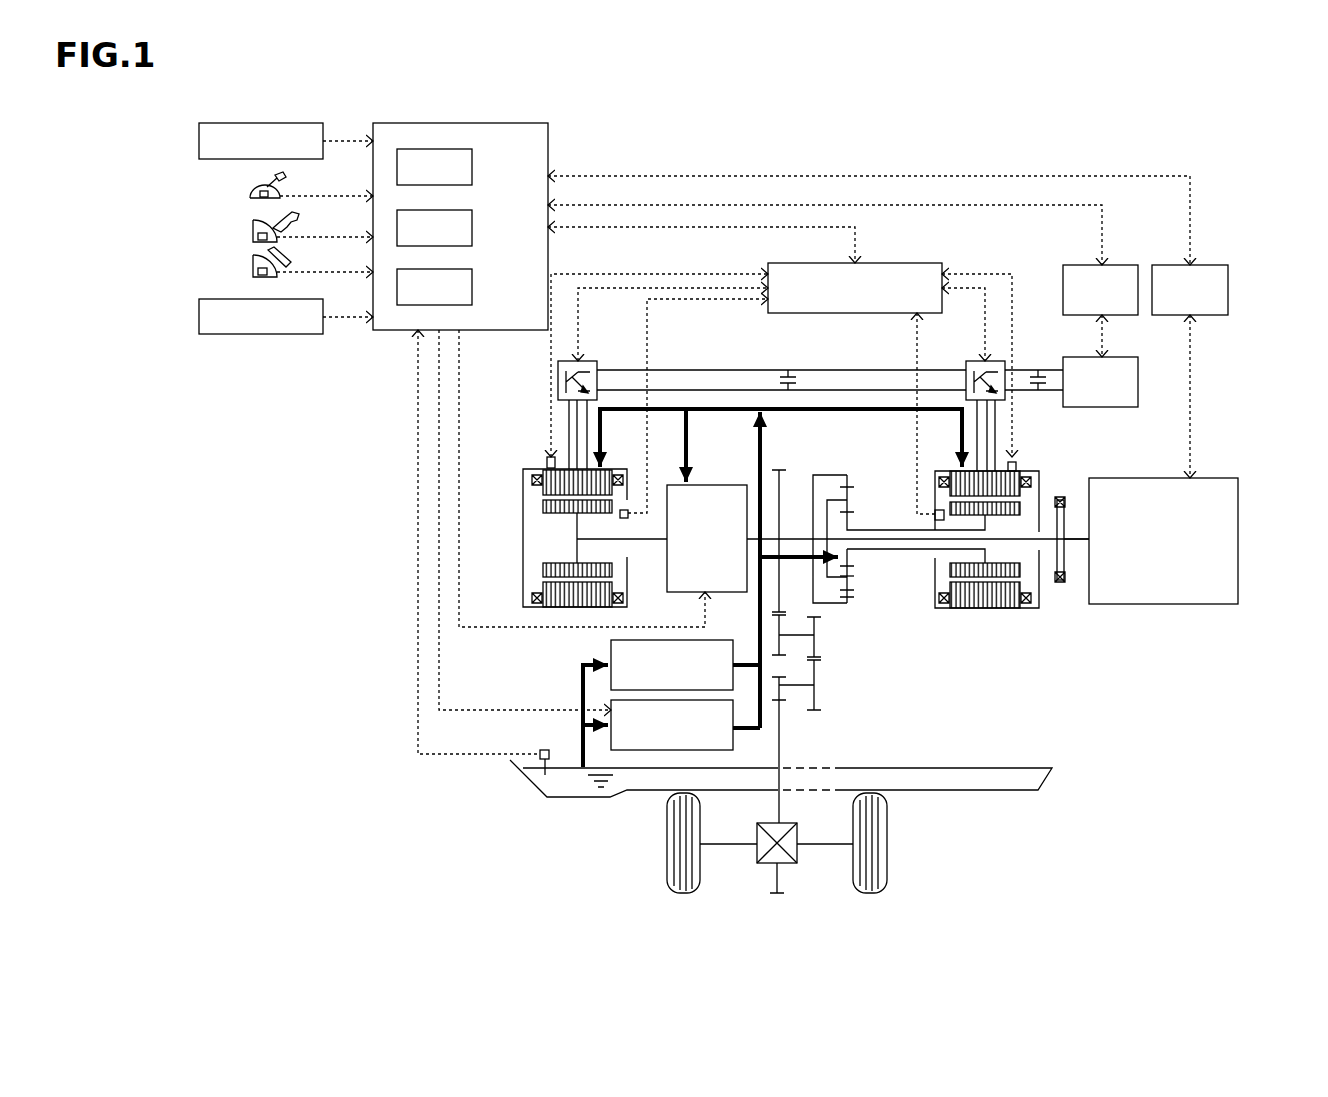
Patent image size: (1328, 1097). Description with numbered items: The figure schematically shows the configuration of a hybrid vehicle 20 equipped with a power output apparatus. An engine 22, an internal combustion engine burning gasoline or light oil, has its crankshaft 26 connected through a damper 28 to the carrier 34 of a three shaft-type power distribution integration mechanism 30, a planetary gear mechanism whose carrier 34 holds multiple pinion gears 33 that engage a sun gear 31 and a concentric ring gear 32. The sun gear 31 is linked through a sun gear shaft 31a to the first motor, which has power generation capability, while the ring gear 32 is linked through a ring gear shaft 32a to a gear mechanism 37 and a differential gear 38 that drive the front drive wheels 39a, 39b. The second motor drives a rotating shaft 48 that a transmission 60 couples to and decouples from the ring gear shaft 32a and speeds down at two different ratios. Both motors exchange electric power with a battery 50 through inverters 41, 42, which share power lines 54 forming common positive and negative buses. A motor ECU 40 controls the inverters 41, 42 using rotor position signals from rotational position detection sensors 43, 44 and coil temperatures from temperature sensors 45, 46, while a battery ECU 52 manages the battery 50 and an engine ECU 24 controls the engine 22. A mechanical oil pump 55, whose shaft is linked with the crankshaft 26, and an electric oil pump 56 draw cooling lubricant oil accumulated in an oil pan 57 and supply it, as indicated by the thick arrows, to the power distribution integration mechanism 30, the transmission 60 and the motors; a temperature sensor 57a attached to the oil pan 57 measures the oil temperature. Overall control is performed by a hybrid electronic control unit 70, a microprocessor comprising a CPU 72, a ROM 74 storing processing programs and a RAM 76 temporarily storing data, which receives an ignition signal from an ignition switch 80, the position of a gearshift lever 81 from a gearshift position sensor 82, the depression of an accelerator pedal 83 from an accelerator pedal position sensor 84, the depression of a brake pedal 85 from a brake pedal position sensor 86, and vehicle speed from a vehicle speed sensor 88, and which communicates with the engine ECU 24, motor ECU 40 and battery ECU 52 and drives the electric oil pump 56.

The hybrid vehicle 20 is at (1009, 153).
The engine 22 is at (1238, 510).
The engine electronic control unit 24 is at (1207, 265).
The crankshaft 26 is at (1072, 543).
The damper 28 is at (1065, 587).
The power distribution integration mechanism 30 is at (899, 528).
The sun gear 31 is at (850, 553).
The sun gear shaft 31a is at (878, 530).
The ring gear 32 is at (850, 597).
The ring gear shaft 32a is at (790, 536).
The pinion gears 33 is at (850, 576).
The carrier 34 is at (823, 505).
The gear mechanism 37 is at (835, 650).
The differential gear 38 is at (797, 855).
The drive wheel 39a is at (667, 873).
The drive wheel 39b is at (887, 873).
The motor electronic control unit 40 is at (893, 263).
The inverter 41 is at (978, 360).
The inverter 42 is at (588, 361).
The rotational position detection sensor 43 is at (937, 510).
The rotational position detection sensor 44 is at (625, 510).
The temperature sensor 45 is at (547, 463).
The temperature sensor 46 is at (1016, 465).
The rotating shaft 48 is at (645, 540).
The battery 50 is at (1100, 410).
The battery electronic control unit 52 is at (1080, 265).
The power lines 54 is at (838, 371).
The mechanical oil pump 55 is at (611, 648).
The electric oil pump 56 is at (733, 743).
The oil pan 57 is at (532, 783).
The temperature sensor 57a is at (538, 752).
The transmission 60 is at (705, 485).
The hybrid electronic control unit 70 is at (460, 123).
The CPU 72 is at (472, 170).
The ROM 74 is at (472, 230).
The RAM 76 is at (472, 290).
The ignition switch 80 is at (199, 136).
The gearshift lever 81 is at (274, 178).
The gearshift position sensor 82 is at (252, 197).
The accelerator pedal 83 is at (282, 220).
The accelerator pedal position sensor 84 is at (254, 238).
The brake pedal 85 is at (272, 256).
The brake pedal position sensor 86 is at (254, 275).
The vehicle speed sensor 88 is at (199, 311).